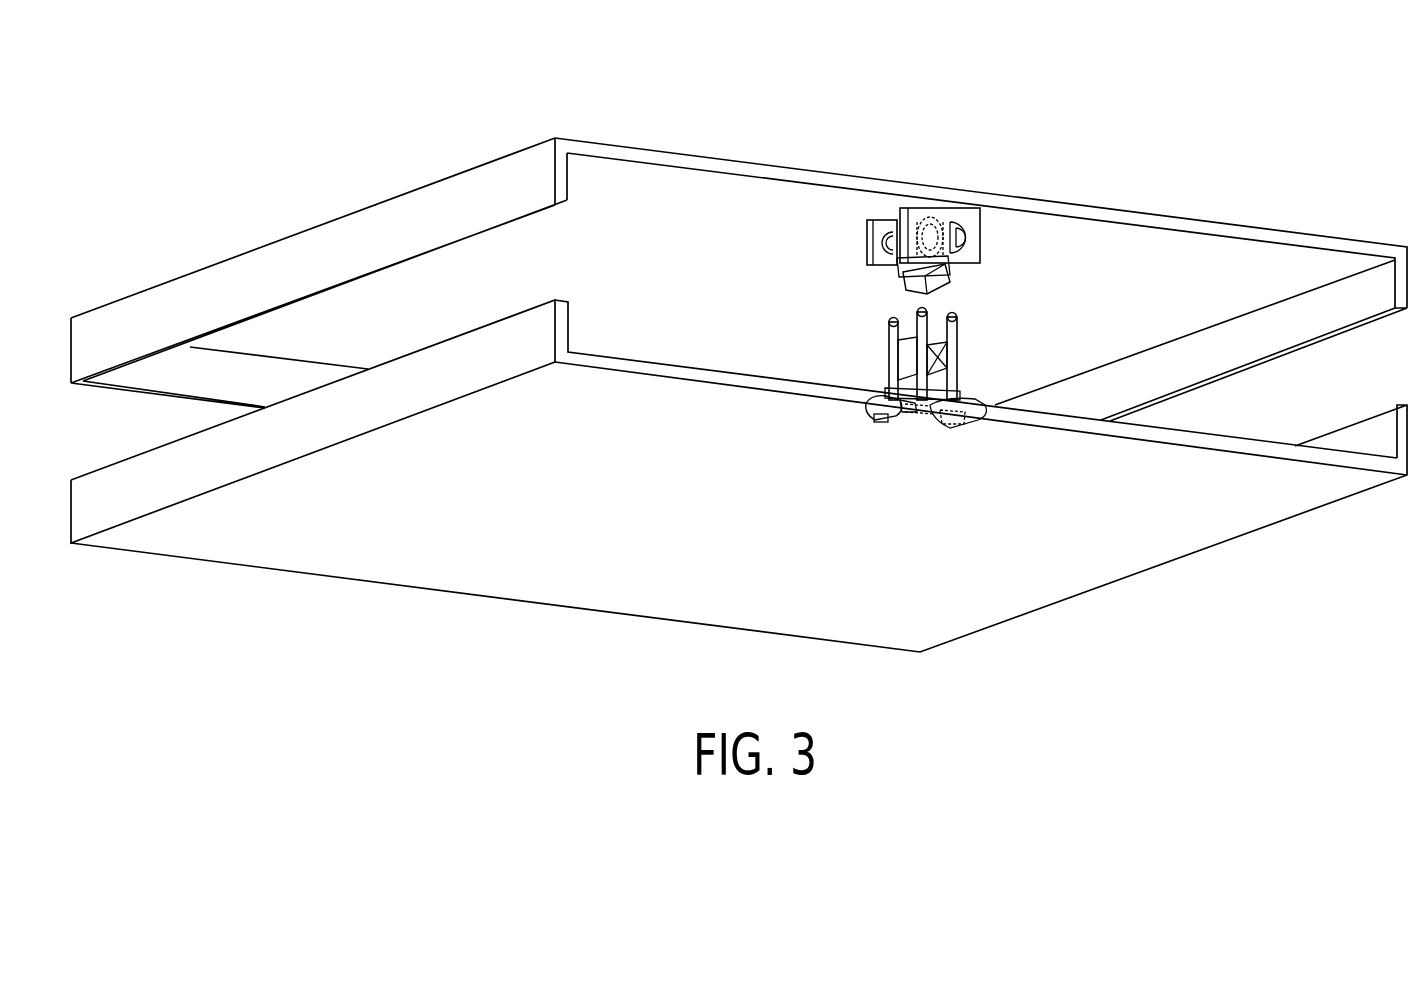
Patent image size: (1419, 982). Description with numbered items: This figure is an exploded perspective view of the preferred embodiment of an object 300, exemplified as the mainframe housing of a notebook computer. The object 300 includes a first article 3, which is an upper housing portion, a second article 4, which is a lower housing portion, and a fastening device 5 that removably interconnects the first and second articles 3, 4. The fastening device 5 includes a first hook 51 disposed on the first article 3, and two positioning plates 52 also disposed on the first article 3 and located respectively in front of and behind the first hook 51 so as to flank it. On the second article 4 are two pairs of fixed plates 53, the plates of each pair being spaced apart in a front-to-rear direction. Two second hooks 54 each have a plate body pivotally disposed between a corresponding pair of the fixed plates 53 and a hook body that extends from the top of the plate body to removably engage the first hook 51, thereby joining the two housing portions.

The object 300 is at (700, 130).
The first article 3 is at (1130, 210).
The second article 4 is at (1220, 543).
The fastening device 5 is at (805, 250).
The first hook 51 is at (900, 289).
The positioning plate 52 is at (862, 228).
The fixed plate 53 is at (868, 424).
The second hook 54 is at (883, 338).